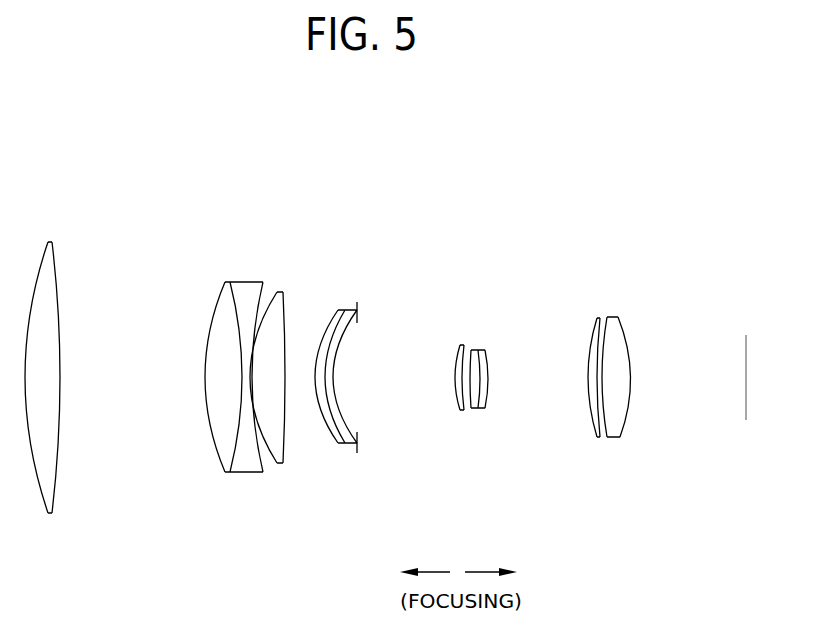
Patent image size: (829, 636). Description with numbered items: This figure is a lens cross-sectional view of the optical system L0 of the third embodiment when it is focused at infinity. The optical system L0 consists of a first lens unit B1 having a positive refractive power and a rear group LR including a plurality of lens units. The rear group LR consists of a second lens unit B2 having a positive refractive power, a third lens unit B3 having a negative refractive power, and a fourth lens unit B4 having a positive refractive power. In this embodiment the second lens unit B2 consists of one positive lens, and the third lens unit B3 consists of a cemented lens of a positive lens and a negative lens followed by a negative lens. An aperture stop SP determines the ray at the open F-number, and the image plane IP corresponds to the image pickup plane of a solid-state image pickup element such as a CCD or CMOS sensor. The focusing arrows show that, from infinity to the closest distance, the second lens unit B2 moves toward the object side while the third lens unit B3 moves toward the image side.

The optical system L0 is at (23, 223).
The first lens unit B1 is at (375, 503).
The second lens unit B2 is at (467, 415).
The third lens unit B3 is at (495, 415).
The fourth lens unit B4 is at (604, 397).
The rear group LR is at (544, 434).
The aperture stop SP is at (358, 316).
The image plane IP is at (746, 362).